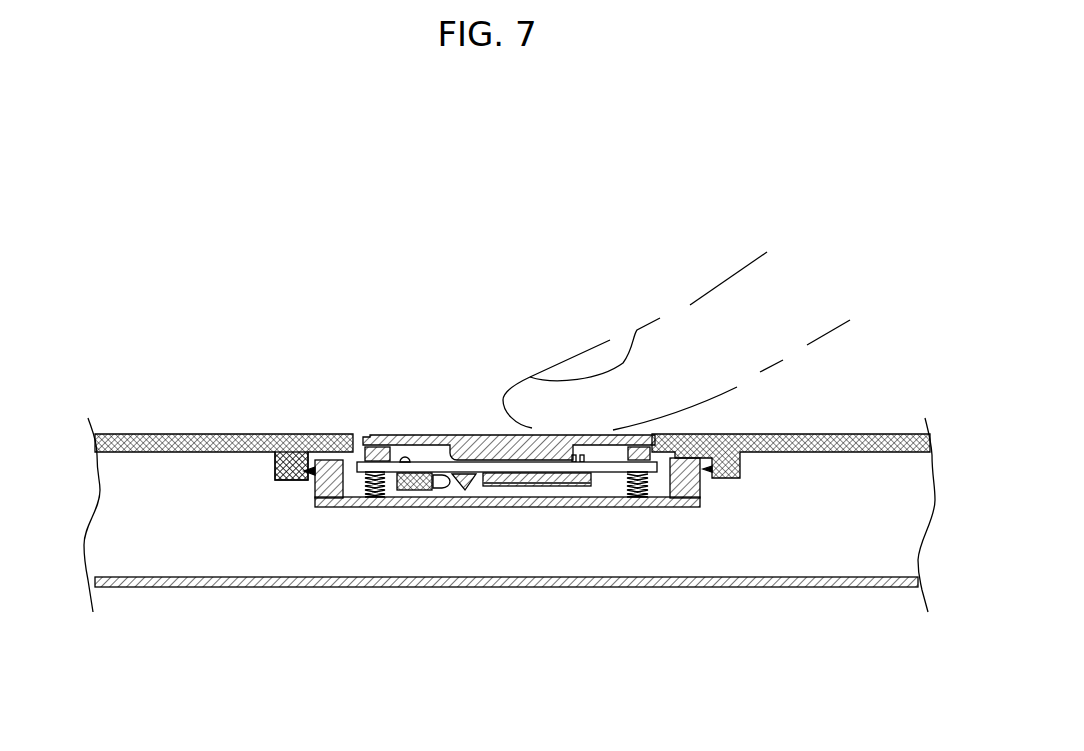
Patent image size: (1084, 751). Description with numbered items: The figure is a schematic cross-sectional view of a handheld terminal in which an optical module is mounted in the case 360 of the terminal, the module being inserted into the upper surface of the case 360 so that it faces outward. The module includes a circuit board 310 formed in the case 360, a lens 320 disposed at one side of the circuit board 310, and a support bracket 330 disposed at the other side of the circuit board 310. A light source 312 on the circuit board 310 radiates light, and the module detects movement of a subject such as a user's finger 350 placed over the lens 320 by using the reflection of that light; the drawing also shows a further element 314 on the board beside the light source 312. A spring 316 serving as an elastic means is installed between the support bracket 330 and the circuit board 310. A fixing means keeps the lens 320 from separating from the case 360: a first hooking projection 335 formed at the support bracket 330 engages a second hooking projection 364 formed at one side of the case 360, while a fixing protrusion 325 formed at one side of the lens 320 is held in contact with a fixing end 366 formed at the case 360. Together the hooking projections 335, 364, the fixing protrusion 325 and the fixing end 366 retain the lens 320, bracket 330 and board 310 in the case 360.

The circuit board 310 is at (613, 472).
The light source 312 is at (440, 490).
The light source 314 is at (518, 487).
The spring 316 is at (351, 498).
The lens 320 is at (400, 434).
The fixing protrusion 325 is at (700, 500).
The support bracket 330 is at (327, 467).
The first hooking projection 335 is at (310, 474).
The finger 350 is at (690, 315).
The case 360 is at (232, 434).
The second hooking projection 364 is at (283, 480).
The fixing end 366 is at (667, 434).